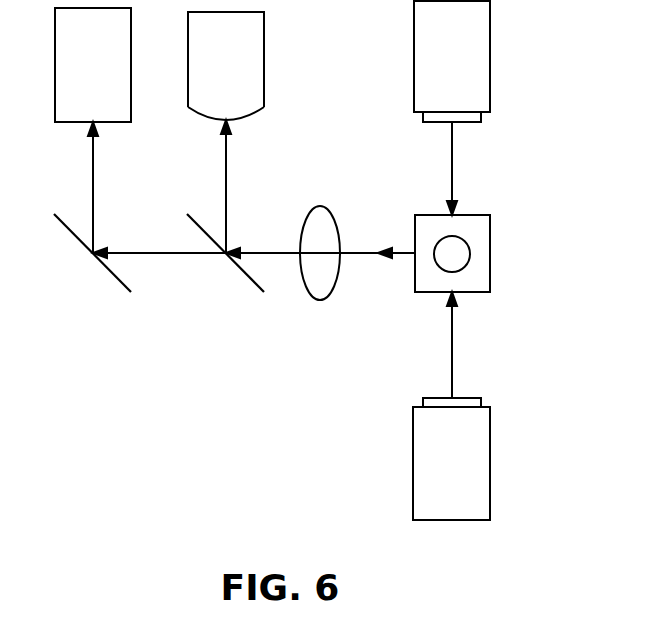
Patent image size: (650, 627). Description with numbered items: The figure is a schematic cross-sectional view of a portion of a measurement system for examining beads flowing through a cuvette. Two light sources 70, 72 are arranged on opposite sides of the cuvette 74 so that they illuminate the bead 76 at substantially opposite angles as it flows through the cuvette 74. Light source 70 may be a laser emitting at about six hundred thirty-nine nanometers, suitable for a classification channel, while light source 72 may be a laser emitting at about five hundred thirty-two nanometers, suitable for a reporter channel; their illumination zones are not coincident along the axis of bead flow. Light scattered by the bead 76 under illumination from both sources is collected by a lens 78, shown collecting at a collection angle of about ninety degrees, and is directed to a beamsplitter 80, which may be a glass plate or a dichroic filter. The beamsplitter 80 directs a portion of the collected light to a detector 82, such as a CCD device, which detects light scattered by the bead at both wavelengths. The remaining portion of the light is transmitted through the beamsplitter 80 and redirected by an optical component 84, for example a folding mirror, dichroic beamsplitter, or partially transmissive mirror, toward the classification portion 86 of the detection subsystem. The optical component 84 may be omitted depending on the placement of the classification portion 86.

The light source 70 is at (451, 459).
The light source 72 is at (452, 61).
The cuvette 74 is at (490, 215).
The bead 76 is at (470, 260).
The lens 78 is at (327, 205).
The beamsplitter 80 is at (250, 278).
The detector 82 is at (226, 66).
The optical component 84 is at (112, 277).
The classification portion 86 is at (93, 65).